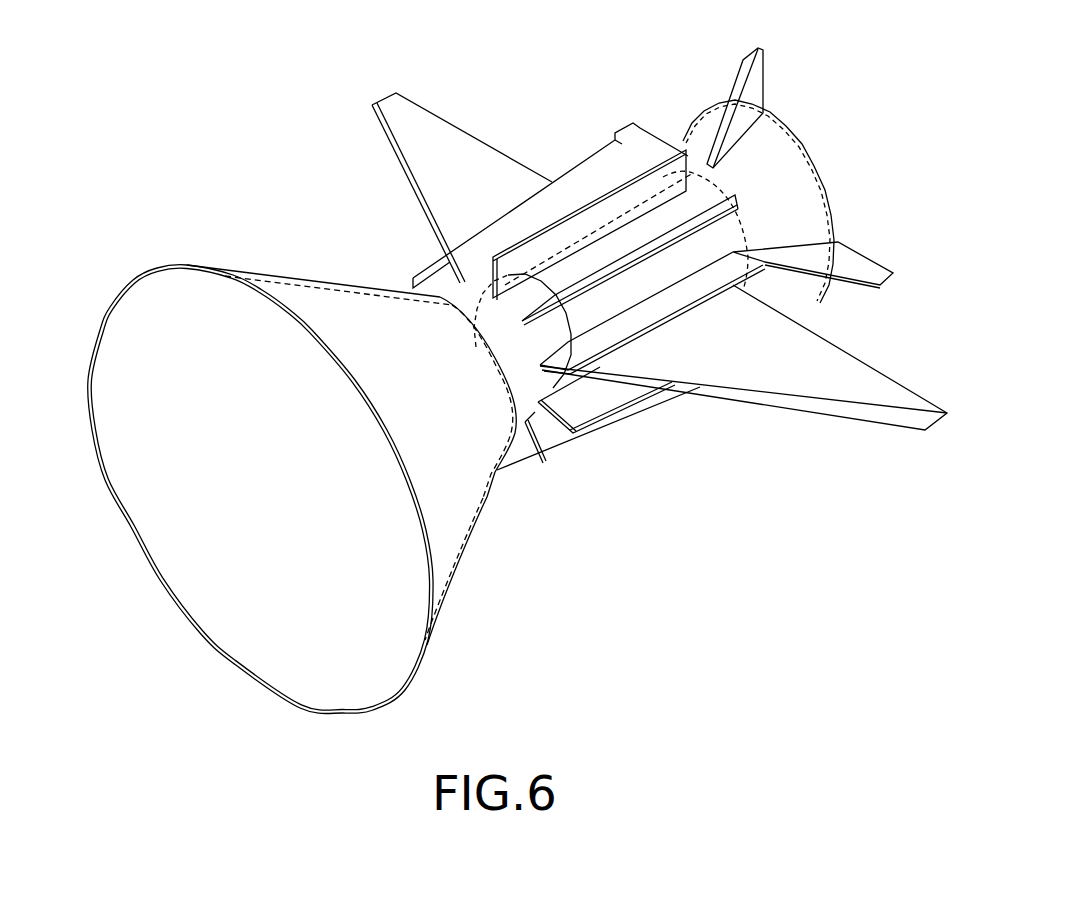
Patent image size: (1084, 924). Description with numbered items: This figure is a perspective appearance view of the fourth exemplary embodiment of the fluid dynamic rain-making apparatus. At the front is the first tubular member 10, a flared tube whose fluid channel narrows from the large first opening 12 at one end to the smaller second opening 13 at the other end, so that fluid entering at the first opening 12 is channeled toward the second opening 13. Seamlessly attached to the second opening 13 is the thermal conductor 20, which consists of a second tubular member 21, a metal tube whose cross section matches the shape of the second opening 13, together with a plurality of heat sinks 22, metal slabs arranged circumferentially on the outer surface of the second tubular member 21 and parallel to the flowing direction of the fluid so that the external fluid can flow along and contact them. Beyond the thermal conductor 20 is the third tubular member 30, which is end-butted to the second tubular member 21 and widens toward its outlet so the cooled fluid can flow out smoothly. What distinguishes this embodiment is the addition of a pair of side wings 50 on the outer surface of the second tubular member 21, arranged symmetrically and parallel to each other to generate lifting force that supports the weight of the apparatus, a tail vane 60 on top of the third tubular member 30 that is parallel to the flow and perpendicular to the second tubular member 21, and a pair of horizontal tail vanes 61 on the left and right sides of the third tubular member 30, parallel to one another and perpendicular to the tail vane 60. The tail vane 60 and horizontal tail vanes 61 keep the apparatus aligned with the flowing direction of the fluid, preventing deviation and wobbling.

The first tubular member 10 is at (337, 283).
The first opening 12 is at (108, 307).
The second opening 13 is at (470, 312).
The thermal conductor 20 is at (600, 464).
The second tubular member 21 is at (528, 420).
The heat sinks 22 is at (597, 412).
The third tubular member 30 is at (688, 148).
The side wings 50 is at (818, 353).
The tail vane 60 is at (758, 77).
The horizontal tail vanes 61 is at (865, 268).